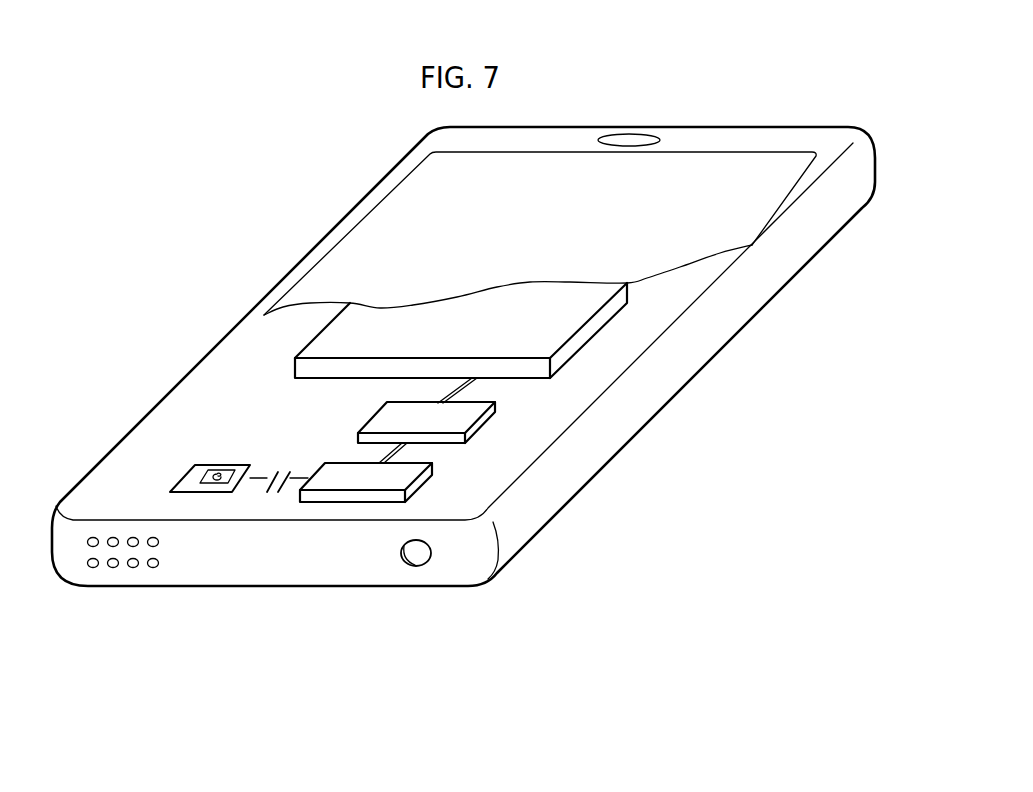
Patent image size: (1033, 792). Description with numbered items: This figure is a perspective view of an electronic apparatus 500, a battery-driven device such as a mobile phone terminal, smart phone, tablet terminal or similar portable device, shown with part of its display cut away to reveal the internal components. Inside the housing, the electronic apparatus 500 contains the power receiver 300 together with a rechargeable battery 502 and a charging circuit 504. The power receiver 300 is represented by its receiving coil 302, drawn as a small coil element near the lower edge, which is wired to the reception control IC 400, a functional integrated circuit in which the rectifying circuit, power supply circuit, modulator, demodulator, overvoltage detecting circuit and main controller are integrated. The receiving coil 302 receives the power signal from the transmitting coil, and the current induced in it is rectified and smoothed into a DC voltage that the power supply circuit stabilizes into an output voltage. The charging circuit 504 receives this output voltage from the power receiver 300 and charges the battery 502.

The electronic apparatus 500 is at (362, 710).
The power receiver 300 is at (655, 461).
The rechargeable battery 502 is at (293, 348).
The charging circuit 504 is at (385, 415).
The reception control IC 400 is at (403, 477).
The receiving coil 302 is at (183, 480).